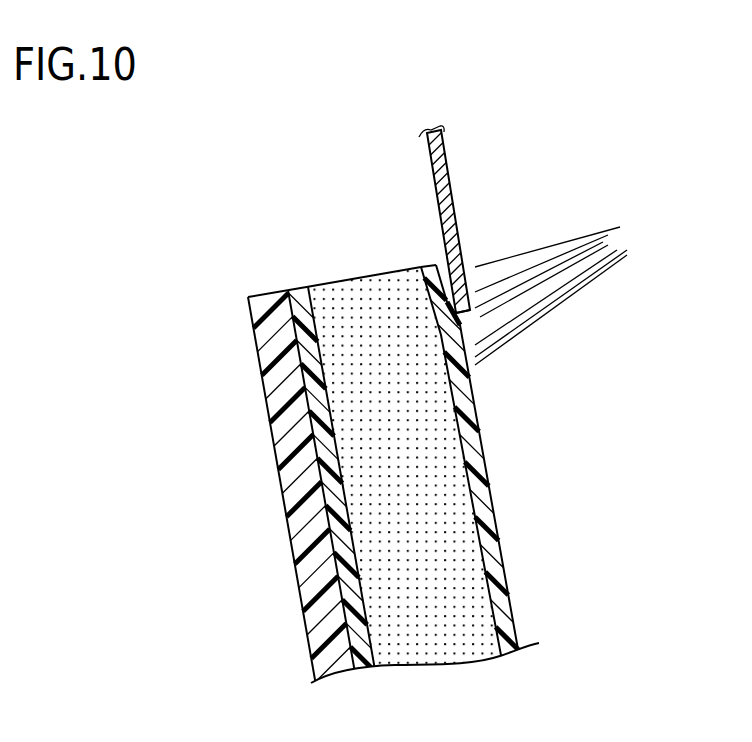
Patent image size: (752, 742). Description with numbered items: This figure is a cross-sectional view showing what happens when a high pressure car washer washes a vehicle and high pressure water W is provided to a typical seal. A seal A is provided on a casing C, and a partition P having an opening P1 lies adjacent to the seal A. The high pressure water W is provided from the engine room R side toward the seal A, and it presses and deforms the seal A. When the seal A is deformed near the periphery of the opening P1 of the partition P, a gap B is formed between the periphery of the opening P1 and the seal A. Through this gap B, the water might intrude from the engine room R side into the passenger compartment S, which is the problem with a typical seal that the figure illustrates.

The seal A is at (355, 279).
The gap B is at (444, 282).
The casing C is at (256, 339).
The partition P is at (448, 136).
The opening P1 is at (480, 323).
The high pressure water W is at (582, 284).
The engine room R is at (588, 417).
The passenger compartment S is at (165, 497).